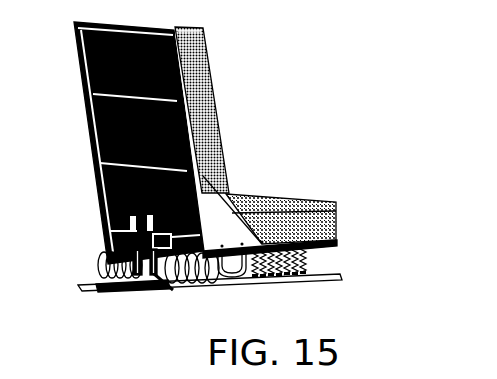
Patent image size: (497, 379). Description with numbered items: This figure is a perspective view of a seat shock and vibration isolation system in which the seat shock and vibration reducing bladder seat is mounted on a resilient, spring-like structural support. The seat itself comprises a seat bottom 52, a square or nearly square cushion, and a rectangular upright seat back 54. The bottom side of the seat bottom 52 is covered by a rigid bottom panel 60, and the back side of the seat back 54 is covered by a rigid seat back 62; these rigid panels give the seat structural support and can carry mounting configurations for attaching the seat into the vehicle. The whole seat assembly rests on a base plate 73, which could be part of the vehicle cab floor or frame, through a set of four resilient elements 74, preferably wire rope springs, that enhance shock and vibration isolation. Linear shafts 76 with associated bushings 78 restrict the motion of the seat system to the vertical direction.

The seat bottom 52 is at (287, 195).
The seat back 54 is at (241, 110).
The rigid bottom panel 60 is at (301, 215).
The rigid seat back 62 is at (82, 133).
The base plate 73 is at (238, 267).
The resilient elements 74 is at (92, 267).
The linear shafts 76 is at (205, 288).
The bushings 78 is at (111, 239).